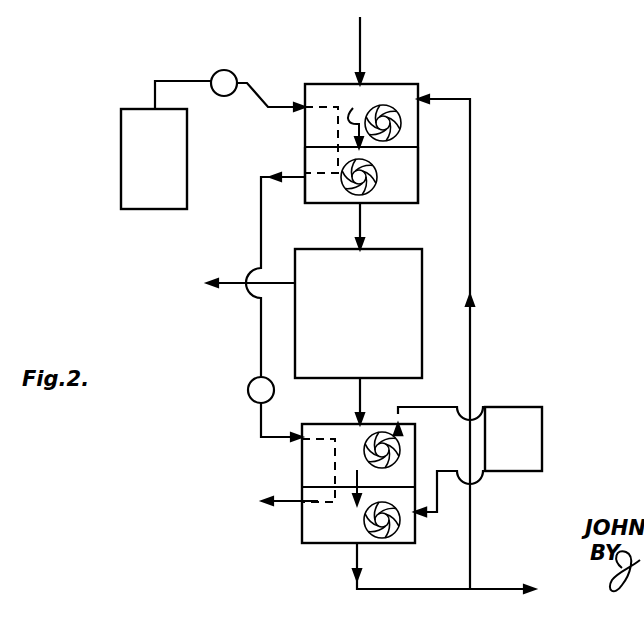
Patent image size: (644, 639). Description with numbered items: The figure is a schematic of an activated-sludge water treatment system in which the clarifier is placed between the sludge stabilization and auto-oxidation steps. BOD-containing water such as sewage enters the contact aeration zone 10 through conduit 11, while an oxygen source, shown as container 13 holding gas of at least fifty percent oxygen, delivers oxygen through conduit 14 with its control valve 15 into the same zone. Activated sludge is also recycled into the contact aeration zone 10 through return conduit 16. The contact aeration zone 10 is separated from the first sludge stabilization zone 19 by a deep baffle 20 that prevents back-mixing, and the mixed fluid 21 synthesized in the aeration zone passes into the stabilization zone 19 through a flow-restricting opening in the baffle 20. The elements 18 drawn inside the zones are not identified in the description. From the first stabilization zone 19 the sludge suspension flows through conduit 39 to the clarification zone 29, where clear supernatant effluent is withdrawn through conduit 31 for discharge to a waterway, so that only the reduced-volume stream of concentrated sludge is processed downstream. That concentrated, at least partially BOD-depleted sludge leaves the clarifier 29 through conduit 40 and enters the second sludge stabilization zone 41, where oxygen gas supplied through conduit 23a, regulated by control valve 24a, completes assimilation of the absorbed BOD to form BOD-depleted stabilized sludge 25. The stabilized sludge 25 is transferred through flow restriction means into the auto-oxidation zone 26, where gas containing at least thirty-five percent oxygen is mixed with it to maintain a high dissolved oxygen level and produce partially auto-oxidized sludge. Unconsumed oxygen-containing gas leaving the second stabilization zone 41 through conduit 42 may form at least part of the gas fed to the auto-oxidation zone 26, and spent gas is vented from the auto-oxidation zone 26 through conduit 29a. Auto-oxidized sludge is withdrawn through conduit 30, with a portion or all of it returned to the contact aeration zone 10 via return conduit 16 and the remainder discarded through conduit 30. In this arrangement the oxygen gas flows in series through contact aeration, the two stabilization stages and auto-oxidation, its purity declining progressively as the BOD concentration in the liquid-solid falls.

The contact aeration zone 10 is at (404, 91).
The conduit 11 is at (360, 31).
The container 13 is at (133, 166).
The conduit 14 is at (176, 81).
The control valve 15 is at (226, 70).
The return conduit 16 is at (472, 356).
The fan 18 is at (401, 124).
The sludge stabilization zone 19 is at (408, 196).
The baffle 20 is at (418, 147).
The mixed fluid 21 is at (338, 130).
The conduit 23a is at (261, 240).
The control valve 24a is at (252, 382).
The BOD-depleted stabilized sludge 25 is at (357, 478).
The auto-oxidation zone 26 is at (313, 527).
The clarification zone 29 is at (321, 258).
The conduit 29a is at (273, 501).
The conduit 30 is at (357, 568).
The conduit 31 is at (243, 282).
The conduit 39 is at (362, 221).
The conduit 40 is at (360, 400).
The second sludge stabilization zone 41 is at (313, 471).
The conduit 42 is at (542, 440).